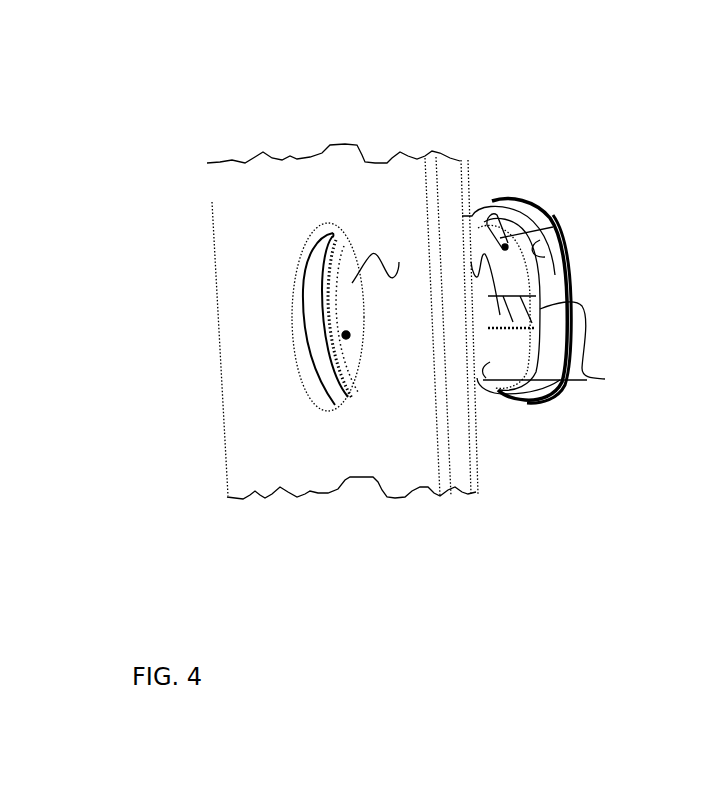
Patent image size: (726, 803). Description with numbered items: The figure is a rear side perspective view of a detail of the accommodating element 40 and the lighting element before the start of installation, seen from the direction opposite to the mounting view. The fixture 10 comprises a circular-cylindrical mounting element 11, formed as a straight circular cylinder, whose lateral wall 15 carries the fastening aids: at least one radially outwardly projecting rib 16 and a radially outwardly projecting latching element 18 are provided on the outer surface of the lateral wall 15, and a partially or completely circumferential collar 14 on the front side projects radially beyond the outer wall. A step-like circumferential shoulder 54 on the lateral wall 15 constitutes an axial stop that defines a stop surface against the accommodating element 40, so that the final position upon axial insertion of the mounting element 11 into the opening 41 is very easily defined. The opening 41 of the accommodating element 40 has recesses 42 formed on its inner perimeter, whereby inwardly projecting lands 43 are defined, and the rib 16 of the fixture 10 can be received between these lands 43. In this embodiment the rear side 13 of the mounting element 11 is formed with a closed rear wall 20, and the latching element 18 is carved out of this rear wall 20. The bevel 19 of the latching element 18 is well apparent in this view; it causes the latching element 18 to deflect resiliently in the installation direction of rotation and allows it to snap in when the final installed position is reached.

The fixture 10 is at (516, 217).
The mounting element 11 is at (500, 200).
The rear side 13 is at (547, 442).
The collar 14 is at (537, 203).
The lateral wall 15 is at (545, 281).
The rib 16 is at (545, 257).
The latching element 18 is at (471, 262).
The bevel 19 is at (605, 379).
The rear wall 20 is at (580, 380).
The accommodating element 40 is at (235, 177).
The opening 41 is at (346, 335).
The recesses 42 is at (363, 332).
The lands 43 is at (399, 262).
The step-like shoulder 54 is at (512, 390).